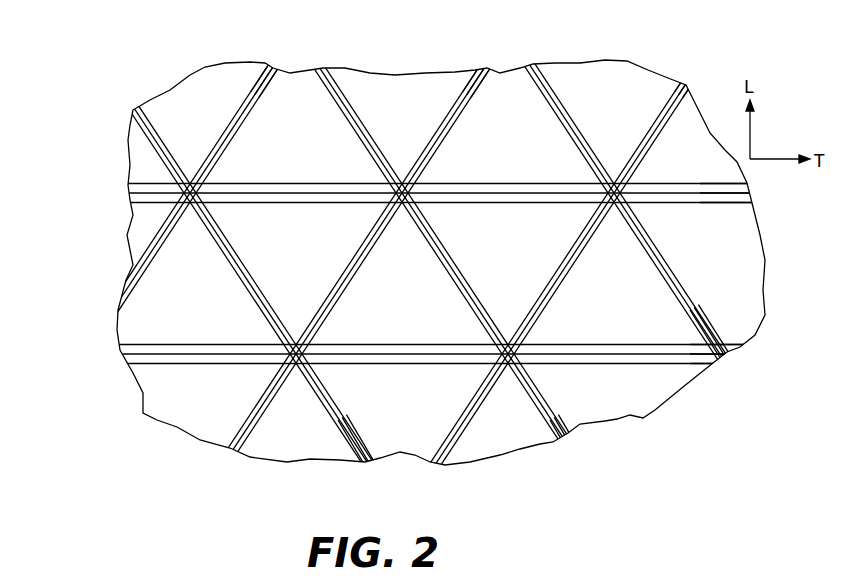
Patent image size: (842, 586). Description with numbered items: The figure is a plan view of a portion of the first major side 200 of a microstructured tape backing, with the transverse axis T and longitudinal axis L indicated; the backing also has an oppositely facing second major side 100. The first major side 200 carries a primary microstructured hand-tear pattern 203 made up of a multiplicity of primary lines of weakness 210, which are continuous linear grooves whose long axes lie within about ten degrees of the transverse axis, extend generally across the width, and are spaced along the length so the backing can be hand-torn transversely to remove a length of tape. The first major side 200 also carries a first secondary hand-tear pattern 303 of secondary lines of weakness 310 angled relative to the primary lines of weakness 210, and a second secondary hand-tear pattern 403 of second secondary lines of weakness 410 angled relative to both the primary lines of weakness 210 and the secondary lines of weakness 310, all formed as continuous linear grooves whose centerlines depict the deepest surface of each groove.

The second major side 100 is at (624, 402).
The first major side 200 is at (173, 48).
The primary microstructured hand-tear pattern 203 is at (111, 193).
The primary lines of weakness 210 is at (752, 192).
The first secondary hand-tear pattern 303 is at (282, 53).
The secondary lines of weakness 310 is at (128, 293).
The second secondary hand-tear pattern 403 is at (738, 378).
The second secondary lines of weakness 410 is at (142, 112).